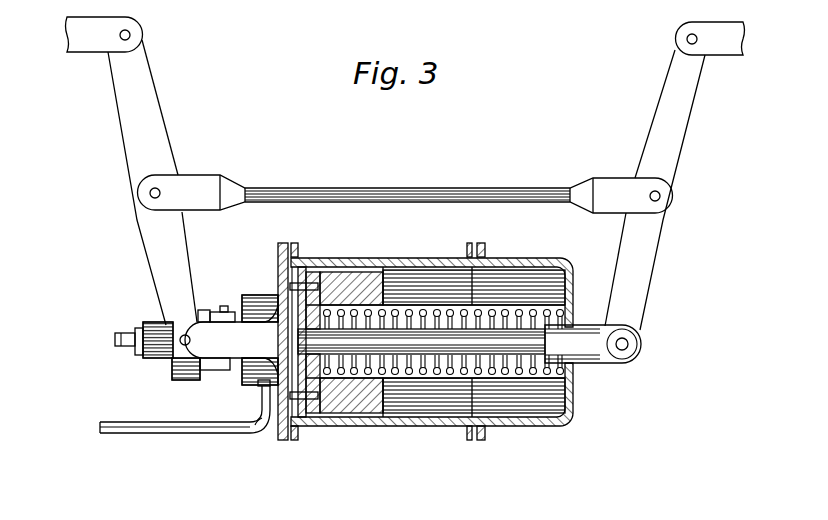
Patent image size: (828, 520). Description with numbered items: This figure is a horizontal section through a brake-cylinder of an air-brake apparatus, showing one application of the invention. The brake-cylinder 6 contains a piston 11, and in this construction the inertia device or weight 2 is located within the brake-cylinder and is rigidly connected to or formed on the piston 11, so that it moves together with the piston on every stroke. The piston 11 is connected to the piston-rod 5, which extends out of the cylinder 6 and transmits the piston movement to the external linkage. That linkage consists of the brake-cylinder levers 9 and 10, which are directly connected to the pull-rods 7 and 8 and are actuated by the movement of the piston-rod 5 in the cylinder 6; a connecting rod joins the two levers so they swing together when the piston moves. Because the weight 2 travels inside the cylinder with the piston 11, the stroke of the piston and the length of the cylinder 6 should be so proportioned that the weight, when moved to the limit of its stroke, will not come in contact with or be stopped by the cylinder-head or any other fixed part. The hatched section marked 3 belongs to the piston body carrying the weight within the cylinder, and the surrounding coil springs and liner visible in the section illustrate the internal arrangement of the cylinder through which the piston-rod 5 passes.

The inertia device or weight 2 is at (340, 342).
The piston body 3 is at (435, 342).
The piston-rod 5 is at (469, 344).
The cylinder 6 is at (400, 426).
The pull-rod 7 is at (731, 49).
The pull-rod 8 is at (89, 46).
The brake-cylinder lever 9 is at (683, 131).
The brake-cylinder lever 10 is at (129, 137).
The piston 11 is at (285, 350).